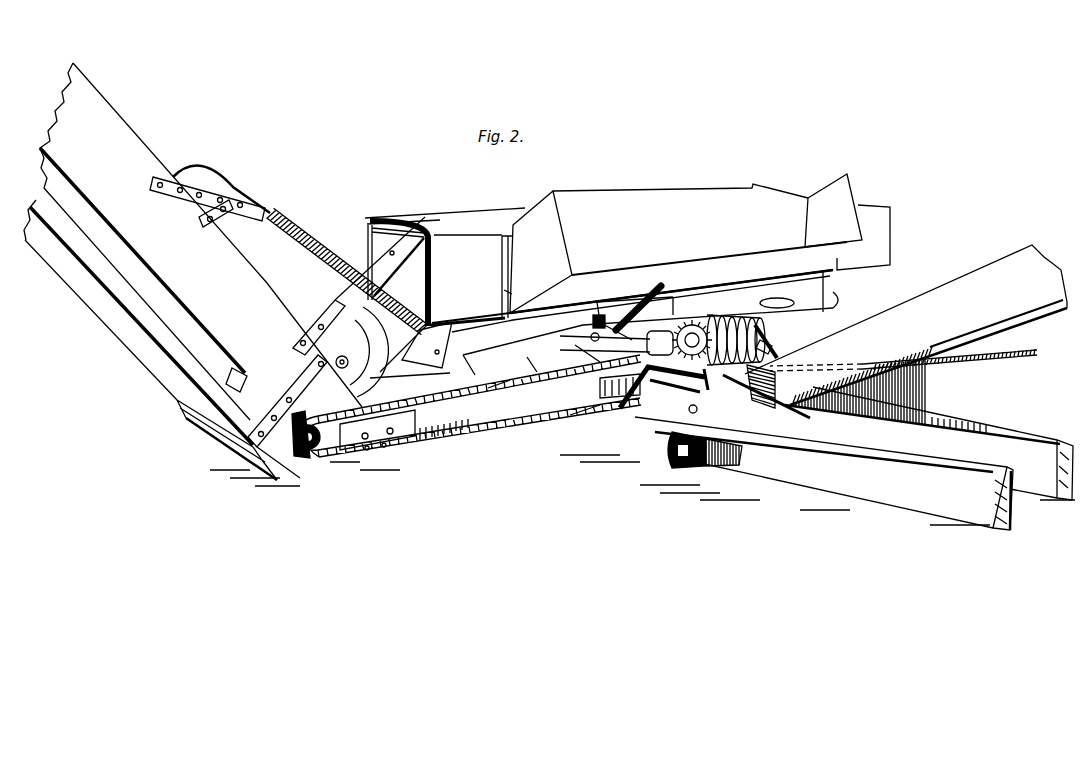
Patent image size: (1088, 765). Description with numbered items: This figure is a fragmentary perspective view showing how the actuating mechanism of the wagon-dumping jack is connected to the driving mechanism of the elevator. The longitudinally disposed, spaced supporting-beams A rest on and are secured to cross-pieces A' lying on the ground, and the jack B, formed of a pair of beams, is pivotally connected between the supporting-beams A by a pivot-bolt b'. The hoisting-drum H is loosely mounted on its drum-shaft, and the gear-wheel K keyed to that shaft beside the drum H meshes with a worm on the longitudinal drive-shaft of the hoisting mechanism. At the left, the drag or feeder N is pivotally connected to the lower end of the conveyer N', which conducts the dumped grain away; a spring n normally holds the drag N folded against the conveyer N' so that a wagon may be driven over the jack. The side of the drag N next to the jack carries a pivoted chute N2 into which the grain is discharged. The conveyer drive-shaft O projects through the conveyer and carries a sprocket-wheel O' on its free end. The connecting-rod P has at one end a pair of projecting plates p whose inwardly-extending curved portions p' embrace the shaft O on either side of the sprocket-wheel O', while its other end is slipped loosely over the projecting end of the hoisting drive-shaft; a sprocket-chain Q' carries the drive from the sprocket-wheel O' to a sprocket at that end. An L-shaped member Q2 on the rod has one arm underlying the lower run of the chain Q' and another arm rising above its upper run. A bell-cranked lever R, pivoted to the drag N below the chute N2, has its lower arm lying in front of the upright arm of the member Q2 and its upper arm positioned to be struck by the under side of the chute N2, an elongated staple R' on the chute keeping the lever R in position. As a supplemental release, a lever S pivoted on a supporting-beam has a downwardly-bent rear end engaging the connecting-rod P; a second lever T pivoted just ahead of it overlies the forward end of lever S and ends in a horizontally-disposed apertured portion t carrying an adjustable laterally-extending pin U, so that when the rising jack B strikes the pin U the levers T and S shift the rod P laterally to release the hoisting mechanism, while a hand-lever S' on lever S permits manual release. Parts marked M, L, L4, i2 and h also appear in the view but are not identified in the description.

The conveyer N' is at (238, 271).
The spring n is at (318, 247).
The drag or feeder N is at (445, 267).
The pivoted chute N2 is at (679, 270).
The frame rail M is at (632, 304).
The hand-lever S' is at (648, 374).
The bell-cranked lever R is at (638, 299).
The elongated staple R' is at (599, 325).
The L-shaped member Q2 is at (599, 343).
The shaft L is at (616, 334).
The gear-wheel K is at (694, 320).
The hoisting-drum H is at (741, 320).
The arm L4 is at (774, 337).
The horizontally-disposed portion t is at (774, 343).
The plate i2 is at (768, 366).
The laterally-extending pin U is at (766, 399).
The lever S is at (662, 387).
The second lever T is at (707, 389).
The pivot-bolt b' is at (710, 414).
The connecting-rod P is at (469, 406).
The drive-shaft O is at (315, 459).
The sprocket-wheel O' is at (302, 447).
The projecting plates p is at (382, 456).
The inwardly-extending curved portions p' is at (360, 462).
The sprocket-chain Q' is at (539, 406).
The supporting-beams A is at (854, 458).
The cross-pieces A' is at (706, 461).
The jack B is at (906, 339).
The cord h is at (972, 358).